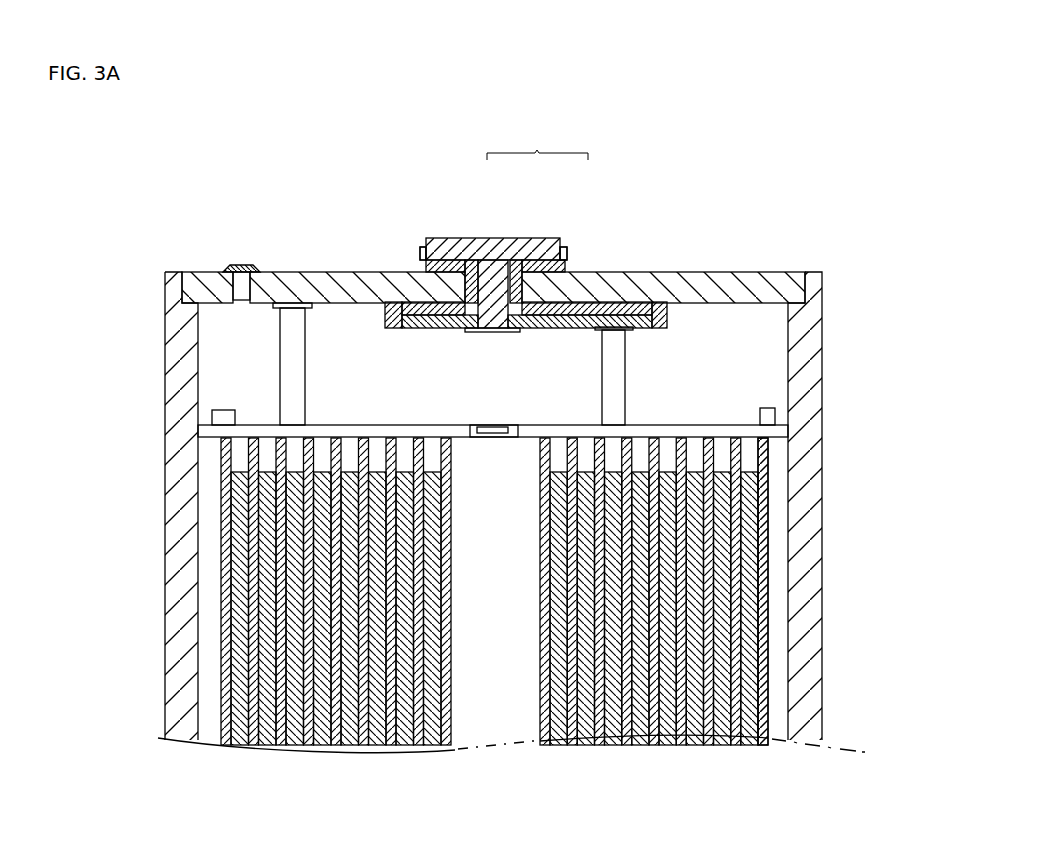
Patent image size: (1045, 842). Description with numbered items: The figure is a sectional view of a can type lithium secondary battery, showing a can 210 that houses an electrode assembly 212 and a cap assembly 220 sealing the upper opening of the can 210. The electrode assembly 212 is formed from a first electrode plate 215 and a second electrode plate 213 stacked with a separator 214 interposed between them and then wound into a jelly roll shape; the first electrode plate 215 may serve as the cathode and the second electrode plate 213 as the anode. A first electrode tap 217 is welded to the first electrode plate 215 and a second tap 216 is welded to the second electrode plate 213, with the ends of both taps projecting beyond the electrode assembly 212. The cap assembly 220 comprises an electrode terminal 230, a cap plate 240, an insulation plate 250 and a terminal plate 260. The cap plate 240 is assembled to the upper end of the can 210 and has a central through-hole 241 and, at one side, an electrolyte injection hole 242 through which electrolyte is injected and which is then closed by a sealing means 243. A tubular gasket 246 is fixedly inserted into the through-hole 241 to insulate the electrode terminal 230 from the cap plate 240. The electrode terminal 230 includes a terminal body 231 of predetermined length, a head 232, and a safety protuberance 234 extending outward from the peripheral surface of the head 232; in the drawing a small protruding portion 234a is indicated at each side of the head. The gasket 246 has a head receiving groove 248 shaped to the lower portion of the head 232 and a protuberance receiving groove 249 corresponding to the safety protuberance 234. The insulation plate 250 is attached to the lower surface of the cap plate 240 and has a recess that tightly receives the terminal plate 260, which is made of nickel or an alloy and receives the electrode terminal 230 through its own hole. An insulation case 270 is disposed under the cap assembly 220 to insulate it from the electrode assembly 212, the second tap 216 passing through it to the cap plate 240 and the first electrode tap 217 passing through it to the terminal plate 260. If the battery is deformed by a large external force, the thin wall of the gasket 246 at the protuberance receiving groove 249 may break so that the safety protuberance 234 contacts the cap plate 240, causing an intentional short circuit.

The can 210 is at (810, 615).
The electrode assembly 212 is at (581, 638).
The second electrode plate 213 is at (747, 728).
The separator 214 is at (762, 733).
The first electrode plate 215 is at (723, 733).
The second tap 216 is at (288, 345).
The first electrode tap 217 is at (622, 398).
The cap assembly 220 is at (489, 227).
The electrode terminal 230 is at (499, 227).
The terminal body 231 is at (495, 262).
The head 232 is at (535, 238).
The safety protuberance 234 is at (553, 250).
The protrusion of terminal nut 234a is at (422, 248).
The cap plate 240 is at (743, 282).
The through-hole 241 is at (452, 237).
The electrolyte injection hole 242 is at (213, 281).
The sealing means 243 is at (240, 267).
The gasket 246 is at (567, 267).
The head receiving groove 248 is at (464, 262).
The protuberance receiving groove 249 is at (420, 268).
The insulation plate 250 is at (663, 332).
The terminal plate 260 is at (432, 332).
The insulation case 270 is at (265, 430).